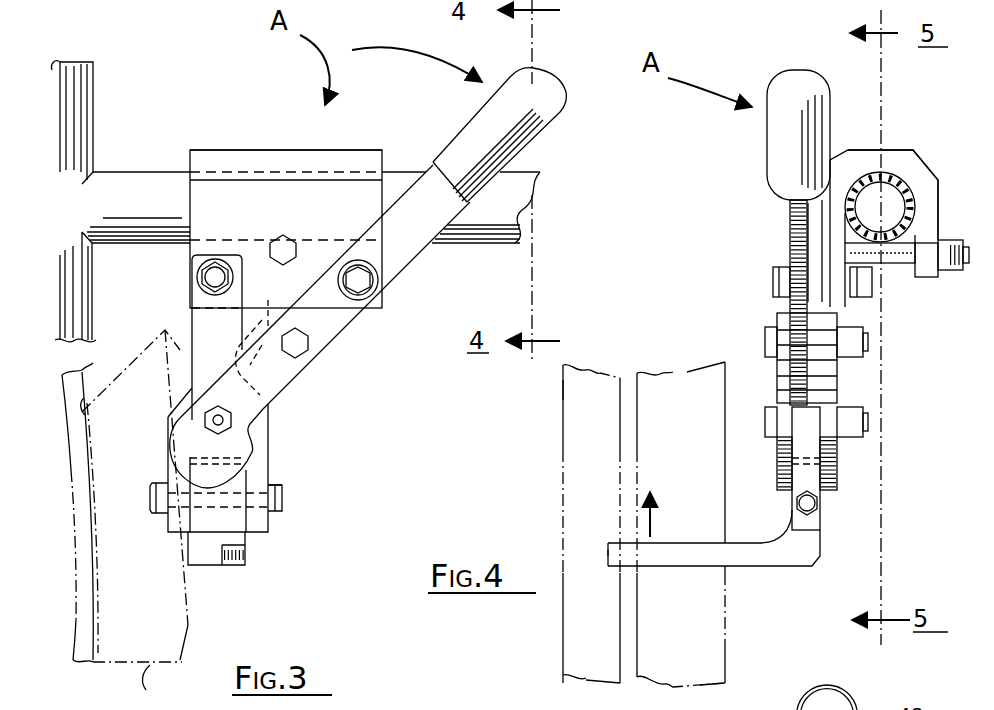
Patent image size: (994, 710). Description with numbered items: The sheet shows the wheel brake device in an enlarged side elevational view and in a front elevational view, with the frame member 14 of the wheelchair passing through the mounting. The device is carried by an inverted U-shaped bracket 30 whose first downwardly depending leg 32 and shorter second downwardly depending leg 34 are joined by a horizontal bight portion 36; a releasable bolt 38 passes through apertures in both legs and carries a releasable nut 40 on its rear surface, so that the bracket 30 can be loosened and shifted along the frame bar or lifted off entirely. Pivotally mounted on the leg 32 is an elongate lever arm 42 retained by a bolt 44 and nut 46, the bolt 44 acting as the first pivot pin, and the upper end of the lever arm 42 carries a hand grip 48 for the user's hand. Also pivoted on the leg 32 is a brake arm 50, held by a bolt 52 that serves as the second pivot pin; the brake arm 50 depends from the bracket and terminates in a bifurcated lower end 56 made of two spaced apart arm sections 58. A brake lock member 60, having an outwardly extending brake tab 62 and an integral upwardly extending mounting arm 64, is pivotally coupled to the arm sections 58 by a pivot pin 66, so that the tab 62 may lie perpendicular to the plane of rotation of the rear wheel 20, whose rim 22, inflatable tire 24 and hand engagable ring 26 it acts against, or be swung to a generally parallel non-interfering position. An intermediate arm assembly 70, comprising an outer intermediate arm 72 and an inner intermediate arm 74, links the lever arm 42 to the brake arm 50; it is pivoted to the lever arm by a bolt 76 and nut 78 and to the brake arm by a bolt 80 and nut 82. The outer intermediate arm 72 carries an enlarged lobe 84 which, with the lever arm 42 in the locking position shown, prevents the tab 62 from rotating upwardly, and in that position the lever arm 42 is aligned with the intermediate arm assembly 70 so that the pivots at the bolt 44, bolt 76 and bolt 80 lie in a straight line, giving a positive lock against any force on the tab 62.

In FIG. 3, the tubular frame member 14 is at (145, 182).
In FIG. 4, the tubular frame member 14 is at (885, 176).
In FIG. 3, the rear wheel 20 is at (183, 620).
In FIG. 4, the rear wheel 20 is at (673, 370).
In FIG. 3, the rim 22 is at (125, 495).
In FIG. 3, the inflatable tire 24 is at (159, 687).
In FIG. 4, the inflatable tire 24 is at (725, 600).
In FIG. 4, the hand engagable ring 26 is at (594, 488).
In FIG. 3, the U-shaped bracket 30 is at (222, 135).
In FIG. 4, the U-shaped bracket 30 is at (855, 148).
In FIG. 3, the first downwardly depending leg 32 is at (392, 305).
In FIG. 4, the first downwardly depending leg 32 is at (838, 260).
In FIG. 4, the second downwardly depending leg 34 is at (930, 183).
In FIG. 3, the horizontal bight portion 36 is at (282, 150).
In FIG. 3, the releasable bolt 38 is at (283, 250).
In FIG. 4, the releasable nut 40 is at (948, 240).
In FIG. 3, the elongate lever arm 42 is at (405, 250).
In FIG. 4, the elongate lever arm 42 is at (795, 215).
In FIG. 3, the bolt 44 is at (362, 300).
In FIG. 4, the bolt 44 is at (775, 272).
In FIG. 4, the nut 46 is at (872, 291).
In FIG. 3, the hand grip 48 is at (492, 120).
In FIG. 4, the hand grip 48 is at (795, 85).
In FIG. 3, the brake arm 50 is at (208, 323).
In FIG. 3, the bolt 52 is at (215, 277).
In FIG. 3, the bifurcated lower end 56 is at (272, 458).
In FIG. 4, the bifurcated lower end 56 is at (788, 443).
In FIG. 3, the arm section 58 is at (180, 520).
In FIG. 4, the arm section 58 is at (822, 440).
In FIG. 3, the brake lock member 60 is at (248, 478).
In FIG. 4, the brake lock member 60 is at (770, 488).
In FIG. 3, the brake tab 62 is at (225, 553).
In FIG. 4, the brake tab 62 is at (668, 556).
In FIG. 3, the mounting arm 64 is at (212, 530).
In FIG. 4, the mounting arm 64 is at (822, 550).
In FIG. 3, the pivot pin 66 is at (278, 498).
In FIG. 4, the pivot pin 66 is at (812, 503).
In FIG. 3, the intermediate arm assembly 70 is at (262, 318).
In FIG. 4, the intermediate arm assembly 70 is at (790, 385).
In FIG. 3, the outer intermediate arm 72 is at (278, 372).
In FIG. 4, the outer intermediate arm 72 is at (790, 375).
In FIG. 3, the inner intermediate arm 74 is at (165, 460).
In FIG. 4, the inner intermediate arm 74 is at (827, 376).
In FIG. 3, the bolt 76 is at (297, 344).
In FIG. 4, the bolt 76 is at (770, 337).
In FIG. 4, the nut 78 is at (845, 335).
In FIG. 3, the bolt 80 is at (216, 420).
In FIG. 4, the bolt 80 is at (775, 422).
In FIG. 4, the nut 82 is at (857, 422).
In FIG. 3, the enlarged lobe 84 is at (192, 438).
In FIG. 4, the enlarged lobe 84 is at (792, 452).